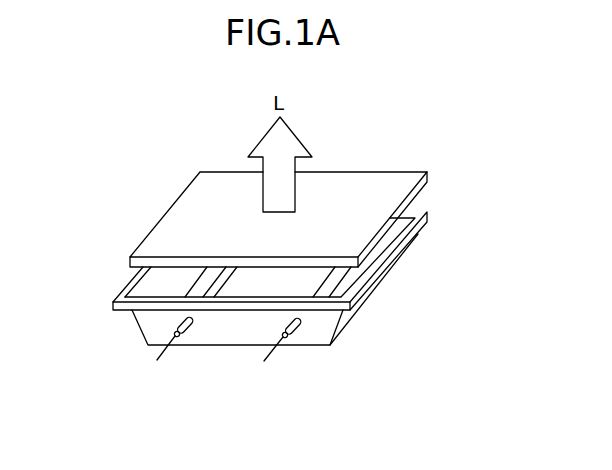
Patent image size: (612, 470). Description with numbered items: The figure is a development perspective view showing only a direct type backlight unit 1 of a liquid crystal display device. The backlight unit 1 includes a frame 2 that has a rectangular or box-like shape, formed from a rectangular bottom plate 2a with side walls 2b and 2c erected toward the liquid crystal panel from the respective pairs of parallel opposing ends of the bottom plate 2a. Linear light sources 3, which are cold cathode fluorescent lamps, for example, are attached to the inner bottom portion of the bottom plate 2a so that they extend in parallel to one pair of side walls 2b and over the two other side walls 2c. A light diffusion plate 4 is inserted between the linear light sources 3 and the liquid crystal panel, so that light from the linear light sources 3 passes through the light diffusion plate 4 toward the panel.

The direct type backlight unit 1 is at (363, 142).
The light diffusion plate 4 is at (393, 173).
The frame 2 is at (334, 347).
The side walls 2b is at (388, 268).
The side walls 2c is at (140, 329).
The bottom plate 2a is at (271, 287).
The linear light sources 3 is at (192, 336).